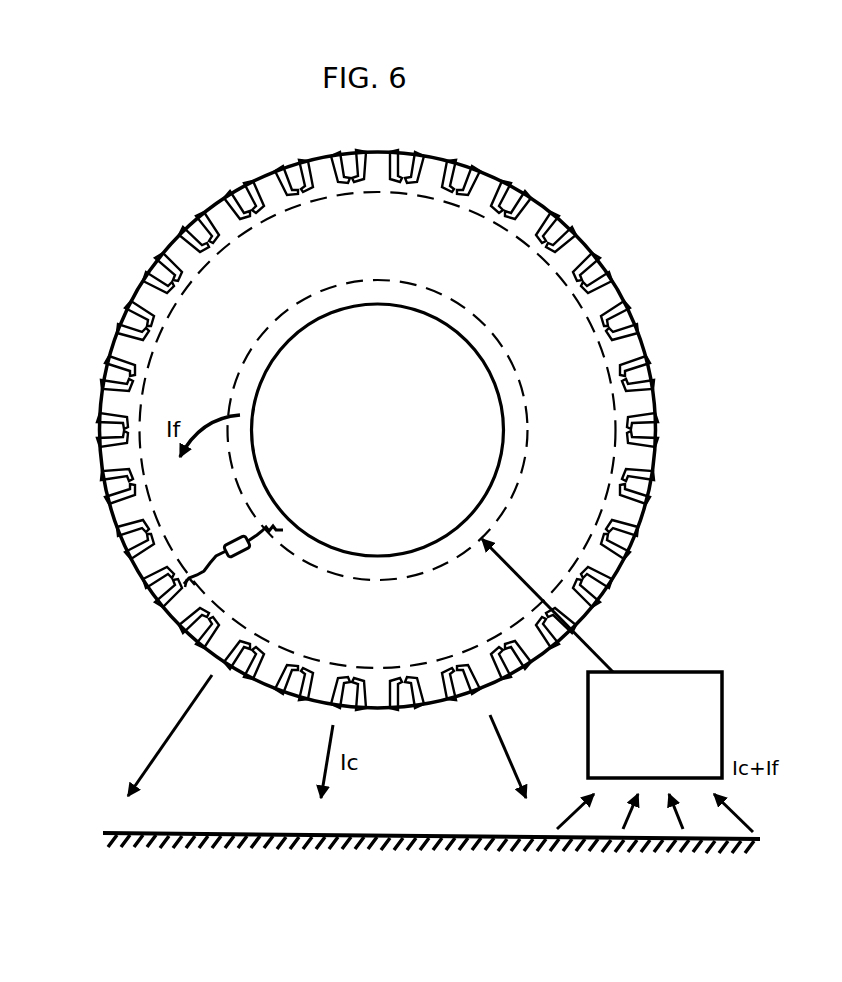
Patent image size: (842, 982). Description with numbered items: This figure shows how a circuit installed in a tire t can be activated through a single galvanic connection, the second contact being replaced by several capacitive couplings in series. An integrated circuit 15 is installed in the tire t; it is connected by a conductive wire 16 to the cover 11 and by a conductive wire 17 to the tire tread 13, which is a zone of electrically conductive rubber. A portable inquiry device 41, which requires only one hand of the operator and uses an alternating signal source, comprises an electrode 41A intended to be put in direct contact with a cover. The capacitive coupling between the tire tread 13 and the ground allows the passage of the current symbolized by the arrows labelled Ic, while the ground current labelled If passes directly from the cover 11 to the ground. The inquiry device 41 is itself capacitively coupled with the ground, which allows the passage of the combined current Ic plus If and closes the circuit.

The tire t is at (190, 216).
The cover 11 is at (498, 385).
The tire tread 13 is at (627, 489).
The integrated circuit 15 is at (236, 533).
The conductive wire 16 is at (286, 529).
The conductive wire 17 is at (205, 584).
The inquiry device 41 is at (711, 670).
The electrode 41A is at (565, 605).